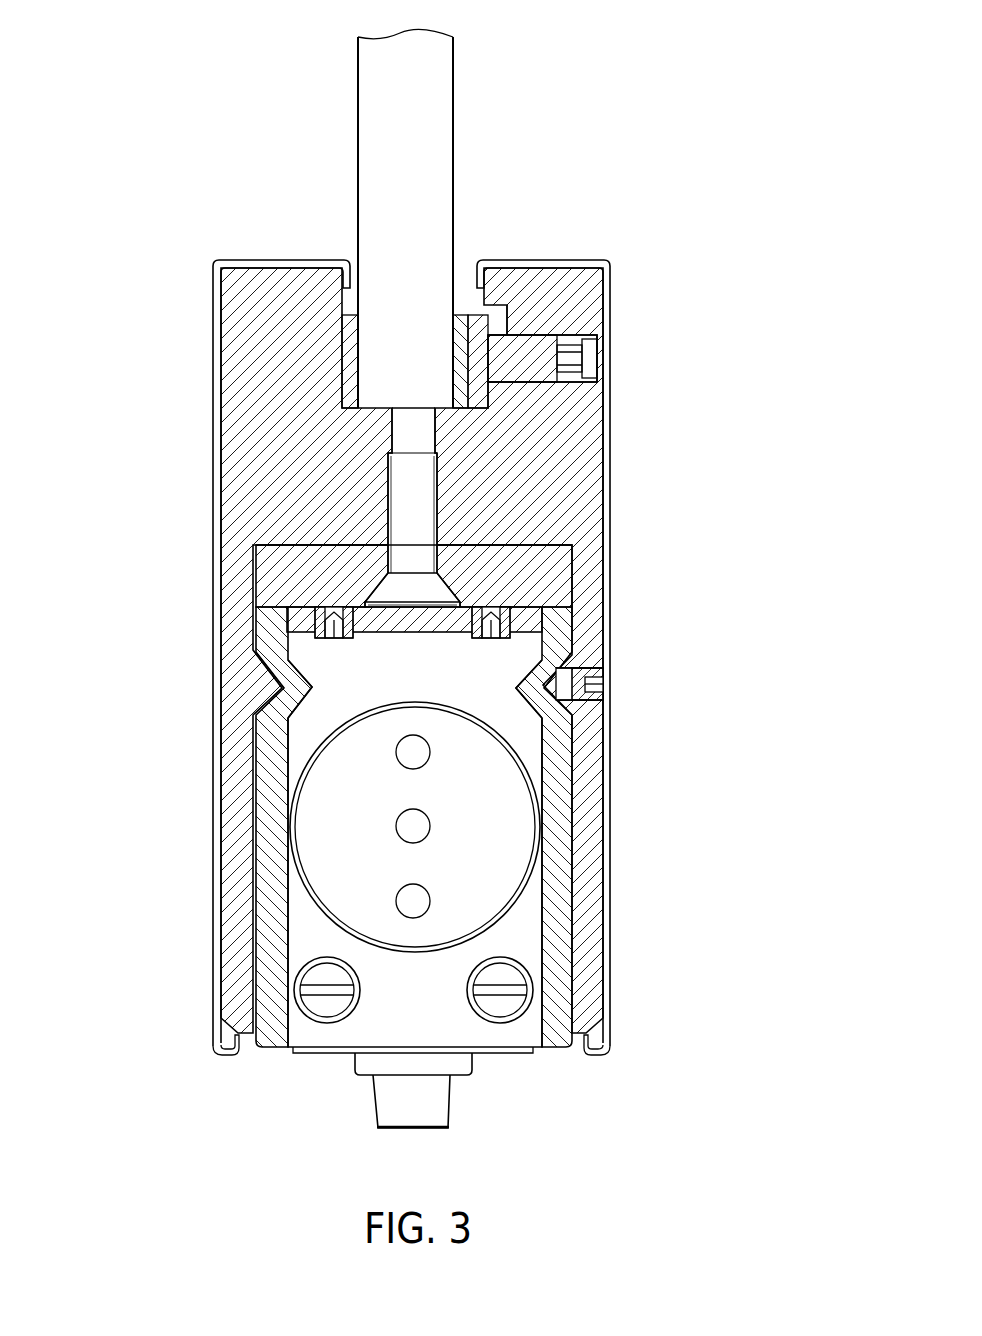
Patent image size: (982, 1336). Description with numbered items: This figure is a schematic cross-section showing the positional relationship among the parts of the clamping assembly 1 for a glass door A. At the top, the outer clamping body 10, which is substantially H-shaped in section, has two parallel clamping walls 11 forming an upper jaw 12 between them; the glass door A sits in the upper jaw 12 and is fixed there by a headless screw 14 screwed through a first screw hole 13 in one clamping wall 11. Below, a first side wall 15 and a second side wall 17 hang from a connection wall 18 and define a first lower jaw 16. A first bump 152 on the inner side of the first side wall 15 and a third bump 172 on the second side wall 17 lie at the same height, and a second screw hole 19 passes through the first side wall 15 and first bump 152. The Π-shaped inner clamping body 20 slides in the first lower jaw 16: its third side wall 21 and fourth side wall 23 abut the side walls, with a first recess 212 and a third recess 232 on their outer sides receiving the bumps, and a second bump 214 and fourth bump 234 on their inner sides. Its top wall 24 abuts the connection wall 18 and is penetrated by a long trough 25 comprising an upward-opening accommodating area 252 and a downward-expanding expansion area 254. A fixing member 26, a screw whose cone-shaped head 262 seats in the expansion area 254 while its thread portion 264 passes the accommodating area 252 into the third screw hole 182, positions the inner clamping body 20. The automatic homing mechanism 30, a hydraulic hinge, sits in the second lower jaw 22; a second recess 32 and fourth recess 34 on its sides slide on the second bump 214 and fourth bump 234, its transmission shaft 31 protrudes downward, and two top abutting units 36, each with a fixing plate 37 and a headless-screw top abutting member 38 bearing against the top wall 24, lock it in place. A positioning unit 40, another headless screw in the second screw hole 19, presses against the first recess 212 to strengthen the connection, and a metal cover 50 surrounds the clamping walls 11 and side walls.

The clamping assembly 1 is at (684, 194).
The glass door A is at (430, 93).
The outer clamping body 10 is at (558, 261).
The clamping walls 11 is at (582, 300).
The upper jaw 12 is at (463, 305).
The first screw hole 13 is at (592, 355).
The headless screw 14 is at (523, 347).
The first side wall 15 is at (588, 975).
The first lower jaw 16 is at (283, 545).
The second side wall 17 is at (235, 968).
The connection wall 18 is at (535, 498).
The second screw hole 19 is at (585, 655).
The inner clamping body 20 is at (451, 566).
The third side wall 21 is at (555, 940).
The second lower jaw 22 is at (321, 624).
The fourth side wall 23 is at (270, 920).
The top wall 24 is at (495, 557).
The long trough 25 is at (554, 581).
The fixing member 26 is at (562, 496).
The automatic homing mechanism 30 is at (433, 875).
The transmission shaft 31 is at (425, 1112).
The second recess 32 is at (530, 785).
The fourth recess 34 is at (310, 760).
The top abutting units 36 is at (305, 640).
The fixing plate 37 is at (318, 622).
The top abutting member 38 is at (333, 645).
The positioning unit 40 is at (598, 682).
The cover 50 is at (211, 307).
The first bump 152 is at (600, 708).
The third bump 172 is at (265, 700).
The third screw hole 182 is at (405, 432).
The first recess 212 is at (570, 748).
The second bump 214 is at (578, 640).
The third recess 232 is at (303, 735).
The fourth bump 234 is at (283, 670).
The accommodating area 252 is at (460, 600).
The expansion area 254 is at (440, 592).
The head 262 is at (408, 590).
The thread portion 264 is at (418, 475).